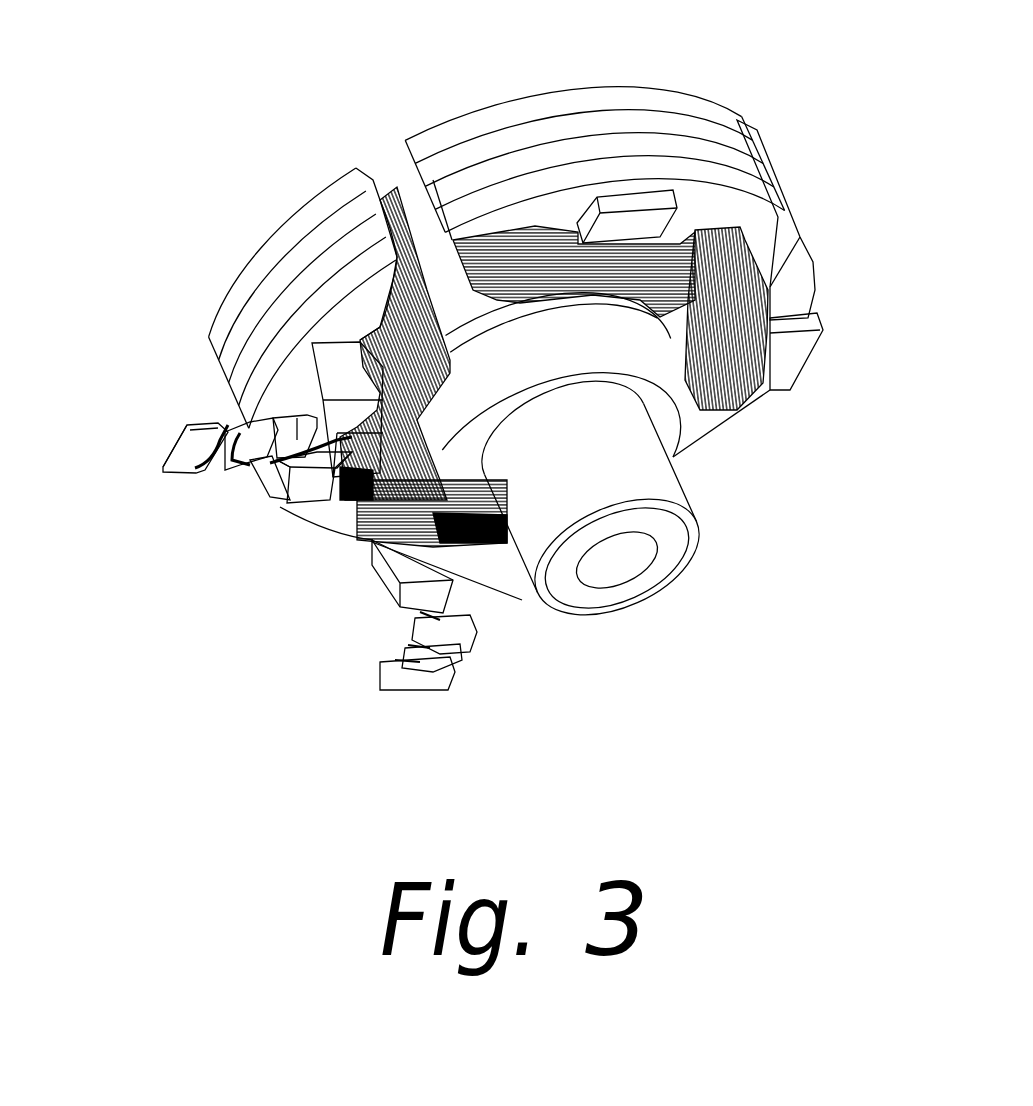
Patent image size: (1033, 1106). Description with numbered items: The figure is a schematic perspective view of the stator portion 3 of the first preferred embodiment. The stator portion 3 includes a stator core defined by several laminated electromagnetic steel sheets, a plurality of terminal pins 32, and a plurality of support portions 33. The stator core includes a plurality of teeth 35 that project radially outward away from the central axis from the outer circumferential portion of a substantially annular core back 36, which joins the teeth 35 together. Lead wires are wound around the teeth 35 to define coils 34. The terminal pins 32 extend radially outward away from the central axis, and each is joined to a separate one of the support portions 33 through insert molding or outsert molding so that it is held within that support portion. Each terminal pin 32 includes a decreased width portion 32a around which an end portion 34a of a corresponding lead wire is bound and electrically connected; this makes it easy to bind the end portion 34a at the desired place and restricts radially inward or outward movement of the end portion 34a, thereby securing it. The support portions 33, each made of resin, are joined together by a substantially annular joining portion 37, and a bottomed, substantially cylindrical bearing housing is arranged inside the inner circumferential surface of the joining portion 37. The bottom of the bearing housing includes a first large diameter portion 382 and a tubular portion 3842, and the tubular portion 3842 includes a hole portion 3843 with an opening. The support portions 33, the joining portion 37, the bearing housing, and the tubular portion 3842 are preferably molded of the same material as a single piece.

The stator portion 3 is at (125, 90).
The terminal pins 32 is at (193, 453).
The decreased width portion 32a is at (213, 467).
The support portions 33 is at (318, 392).
The coils 34 is at (747, 267).
The end portions of the lead wires 34a is at (230, 477).
The teeth 35 is at (655, 147).
The core back 36 is at (455, 262).
The joining portion 37 is at (400, 603).
The first large diameter portion 382 is at (767, 360).
The tubular portion 3842 is at (620, 470).
The hole portion 3843 is at (617, 565).